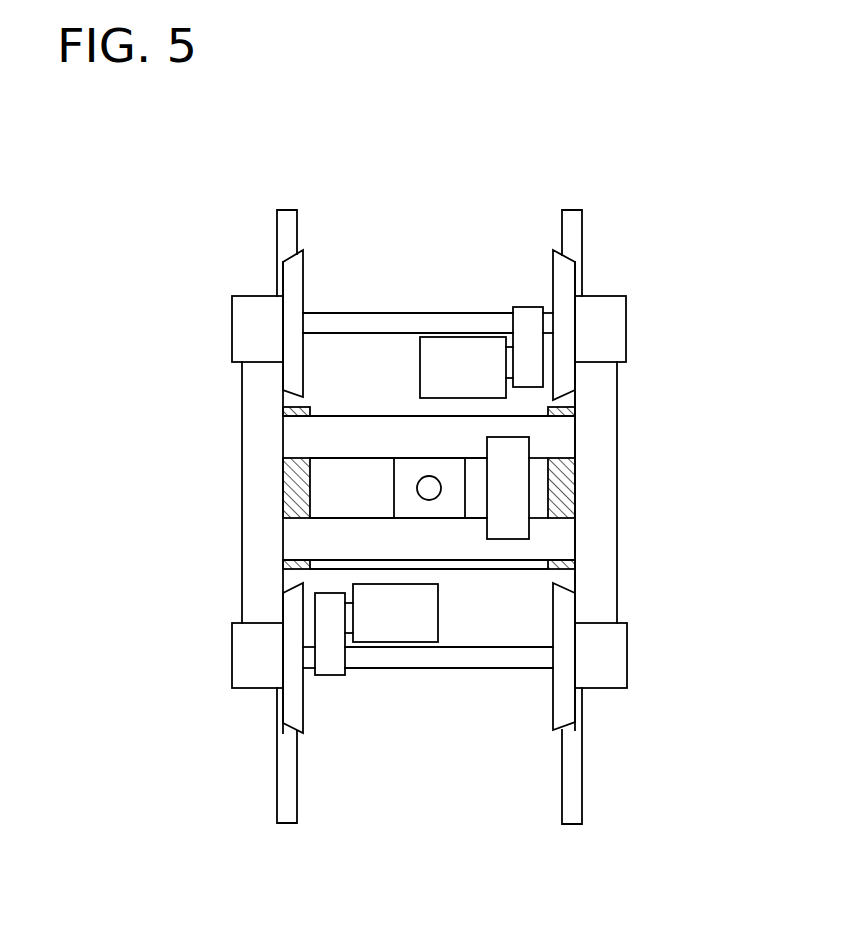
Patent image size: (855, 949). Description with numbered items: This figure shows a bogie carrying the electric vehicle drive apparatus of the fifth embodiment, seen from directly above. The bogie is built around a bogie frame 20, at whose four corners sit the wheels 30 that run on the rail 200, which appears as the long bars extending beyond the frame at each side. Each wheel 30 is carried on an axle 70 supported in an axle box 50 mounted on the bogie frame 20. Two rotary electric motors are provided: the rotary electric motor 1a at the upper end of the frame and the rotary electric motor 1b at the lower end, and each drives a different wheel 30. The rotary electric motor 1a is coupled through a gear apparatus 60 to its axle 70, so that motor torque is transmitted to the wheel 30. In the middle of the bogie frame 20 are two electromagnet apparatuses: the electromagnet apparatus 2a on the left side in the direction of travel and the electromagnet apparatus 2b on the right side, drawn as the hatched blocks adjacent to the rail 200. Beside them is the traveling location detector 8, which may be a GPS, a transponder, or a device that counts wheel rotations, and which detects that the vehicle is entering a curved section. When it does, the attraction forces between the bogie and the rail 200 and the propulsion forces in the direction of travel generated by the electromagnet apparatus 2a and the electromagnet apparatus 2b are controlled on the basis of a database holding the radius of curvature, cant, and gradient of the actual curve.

The rail 200 is at (286, 220).
The rotary electric motor 1a is at (443, 355).
The rotary electric motor 1b is at (380, 633).
The gear apparatus 60 is at (532, 322).
The wheel 30 is at (567, 278).
The axle box 50 is at (628, 323).
The bogie frame 20 is at (618, 432).
The electromagnet apparatus 2a is at (290, 493).
The electromagnet apparatus 2b is at (567, 490).
The traveling location detector 8 is at (518, 530).
The axle 70 is at (530, 658).